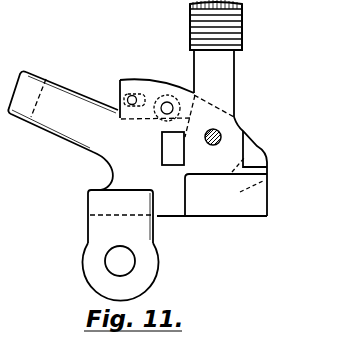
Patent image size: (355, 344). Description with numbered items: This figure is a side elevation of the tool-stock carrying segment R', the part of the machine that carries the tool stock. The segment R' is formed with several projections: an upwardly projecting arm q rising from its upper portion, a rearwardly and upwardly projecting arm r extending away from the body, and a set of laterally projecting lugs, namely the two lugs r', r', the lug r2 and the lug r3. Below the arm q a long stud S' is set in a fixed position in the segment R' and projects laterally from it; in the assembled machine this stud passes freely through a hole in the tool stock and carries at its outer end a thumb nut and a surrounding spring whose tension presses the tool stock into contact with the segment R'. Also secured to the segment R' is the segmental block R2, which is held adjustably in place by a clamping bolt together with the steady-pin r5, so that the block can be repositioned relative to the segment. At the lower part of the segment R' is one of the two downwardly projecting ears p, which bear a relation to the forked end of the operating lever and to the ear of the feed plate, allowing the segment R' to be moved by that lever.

The upwardly projecting arm q is at (216, 58).
The rearwardly and upwardly projecting arm r is at (63, 130).
The laterally projecting lug r3 is at (46, 79).
The segmental block R2 is at (134, 124).
The steady-pin r5 is at (133, 96).
The laterally projecting lug r2 is at (168, 102).
The segment R' is at (199, 166).
The laterally projecting lugs r' is at (214, 149).
The long stud S' is at (210, 147).
The downwardly projecting ear p is at (121, 245).